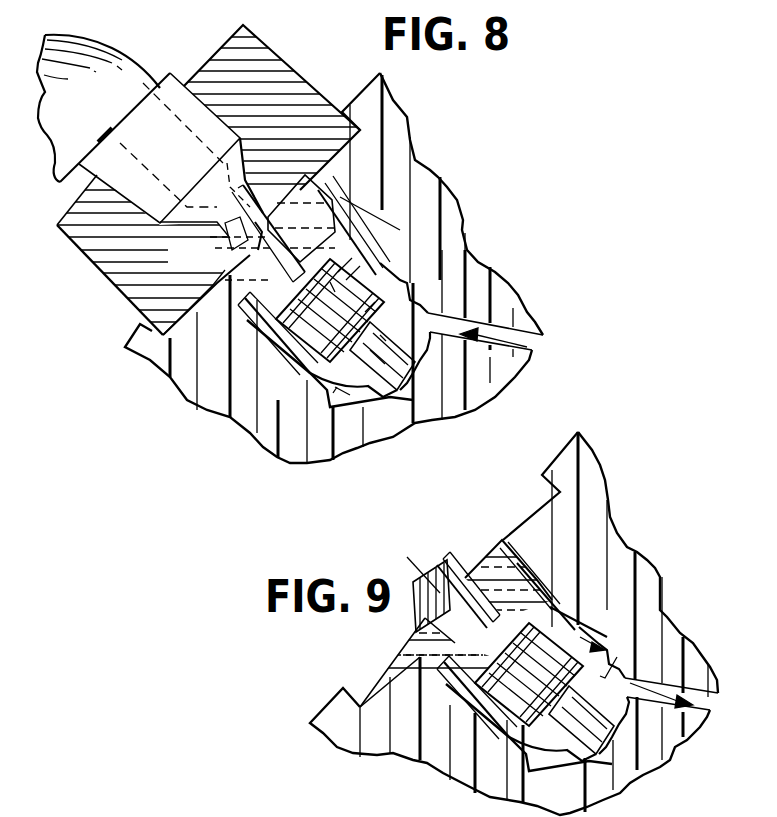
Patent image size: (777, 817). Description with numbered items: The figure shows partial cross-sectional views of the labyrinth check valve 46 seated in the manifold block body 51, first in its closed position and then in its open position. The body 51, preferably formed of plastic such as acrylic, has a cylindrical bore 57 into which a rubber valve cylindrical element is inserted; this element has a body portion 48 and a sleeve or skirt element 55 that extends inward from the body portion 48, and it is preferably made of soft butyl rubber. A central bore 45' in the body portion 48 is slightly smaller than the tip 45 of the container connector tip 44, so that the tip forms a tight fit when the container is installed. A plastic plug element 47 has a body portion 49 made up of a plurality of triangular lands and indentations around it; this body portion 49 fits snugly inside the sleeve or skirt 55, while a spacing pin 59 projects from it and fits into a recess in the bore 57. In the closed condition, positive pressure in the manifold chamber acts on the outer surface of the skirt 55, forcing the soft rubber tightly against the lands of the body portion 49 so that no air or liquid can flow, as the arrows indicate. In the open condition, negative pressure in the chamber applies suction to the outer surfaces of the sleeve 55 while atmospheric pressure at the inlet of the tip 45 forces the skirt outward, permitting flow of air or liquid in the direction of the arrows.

In FIG. 8, the container connector tip 44 is at (218, 130).
In FIG. 8, the tip 45 is at (177, 255).
In FIG. 9, the tip 45 is at (506, 572).
In FIG. 8, the central bore 45' is at (362, 186).
In FIG. 9, the central bore 45' is at (421, 612).
In FIG. 8, the labyrinth check valve 46 is at (338, 92).
In FIG. 9, the labyrinth check valve 46 is at (500, 536).
In FIG. 8, the plastic plug element 47 is at (359, 384).
In FIG. 9, the plastic plug element 47 is at (551, 733).
In FIG. 8, the body portion 48 is at (292, 213).
In FIG. 9, the body portion 48 is at (420, 632).
In FIG. 8, the body portion 49 is at (383, 270).
In FIG. 8, the manifold block body 51 is at (455, 222).
In FIG. 9, the manifold block body 51 is at (606, 497).
In FIG. 8, the sleeve or skirt element 55 is at (305, 348).
In FIG. 9, the sleeve or skirt element 55 is at (473, 712).
In FIG. 8, the cylindrical bore 57 is at (335, 390).
In FIG. 9, the cylindrical bore 57 is at (612, 672).
In FIG. 8, the spacing pin 59 is at (408, 358).